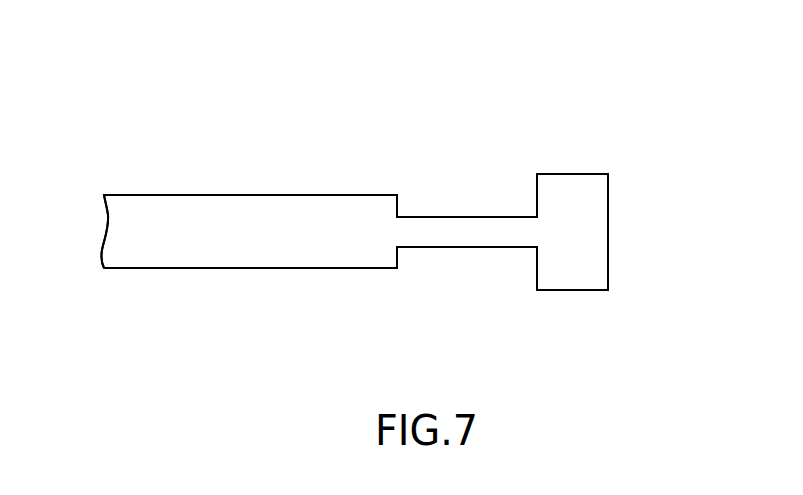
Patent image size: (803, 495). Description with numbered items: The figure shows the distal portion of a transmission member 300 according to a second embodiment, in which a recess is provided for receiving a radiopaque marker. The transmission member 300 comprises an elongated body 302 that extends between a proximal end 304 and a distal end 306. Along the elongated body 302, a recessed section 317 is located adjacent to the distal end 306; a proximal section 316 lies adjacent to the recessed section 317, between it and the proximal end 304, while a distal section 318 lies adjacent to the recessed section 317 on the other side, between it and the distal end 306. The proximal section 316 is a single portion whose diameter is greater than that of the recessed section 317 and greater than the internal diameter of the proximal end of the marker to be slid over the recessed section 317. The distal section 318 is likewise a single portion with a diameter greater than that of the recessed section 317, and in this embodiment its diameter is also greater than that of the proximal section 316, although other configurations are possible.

The transmission member 300 is at (265, 69).
The elongated body 302 is at (352, 260).
The proximal end 304 is at (90, 257).
The distal end 306 is at (617, 254).
The proximal section 316 is at (321, 188).
The recessed section 317 is at (458, 206).
The distal section 318 is at (574, 168).